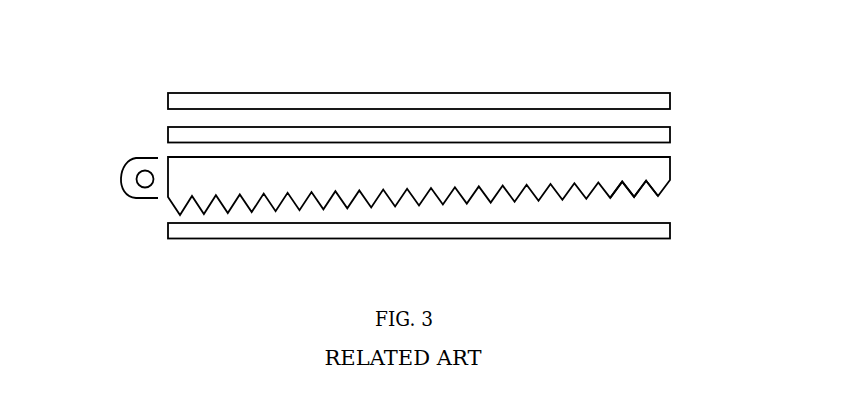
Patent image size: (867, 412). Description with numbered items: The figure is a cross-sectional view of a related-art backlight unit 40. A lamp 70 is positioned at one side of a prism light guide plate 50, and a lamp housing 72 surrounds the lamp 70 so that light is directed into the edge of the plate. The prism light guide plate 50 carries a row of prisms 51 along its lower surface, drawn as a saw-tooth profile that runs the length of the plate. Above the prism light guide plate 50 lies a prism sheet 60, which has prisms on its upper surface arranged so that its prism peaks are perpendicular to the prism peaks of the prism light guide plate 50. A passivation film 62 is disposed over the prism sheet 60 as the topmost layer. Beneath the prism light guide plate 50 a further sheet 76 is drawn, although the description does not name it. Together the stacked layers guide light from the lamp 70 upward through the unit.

The backlight unit 40 is at (682, 56).
The prism light guide plate 50 is at (638, 167).
The prisms 51 is at (658, 191).
The prism sheet 60 is at (638, 131).
The passivation film 62 is at (638, 96).
The lamp 70 is at (136, 179).
The lamp housing 72 is at (126, 170).
The reflection sheet 76 is at (638, 227).